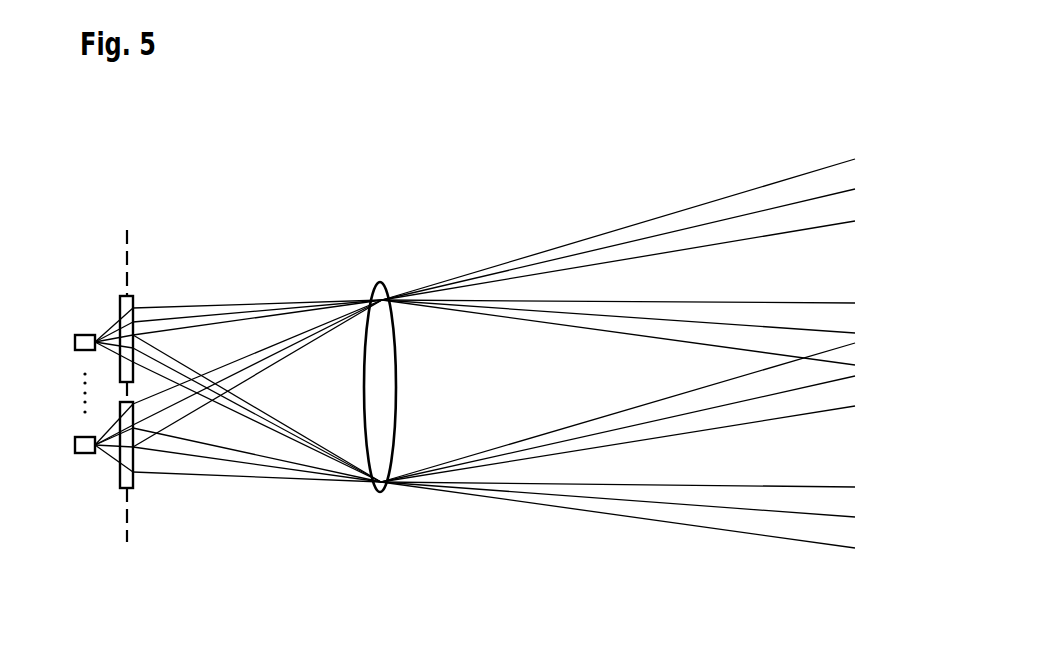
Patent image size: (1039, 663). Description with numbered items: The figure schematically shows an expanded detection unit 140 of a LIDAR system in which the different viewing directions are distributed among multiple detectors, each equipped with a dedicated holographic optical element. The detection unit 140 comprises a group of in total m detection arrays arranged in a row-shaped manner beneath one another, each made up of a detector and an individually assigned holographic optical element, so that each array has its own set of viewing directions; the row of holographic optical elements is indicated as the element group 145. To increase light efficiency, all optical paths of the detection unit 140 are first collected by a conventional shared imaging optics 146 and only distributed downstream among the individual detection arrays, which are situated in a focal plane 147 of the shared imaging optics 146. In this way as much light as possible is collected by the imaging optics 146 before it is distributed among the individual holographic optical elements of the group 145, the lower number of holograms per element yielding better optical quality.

The detection unit 140 is at (104, 163).
The microlens array 145 is at (181, 495).
The imaging optics 146 is at (378, 488).
The focal plane 147 is at (128, 253).